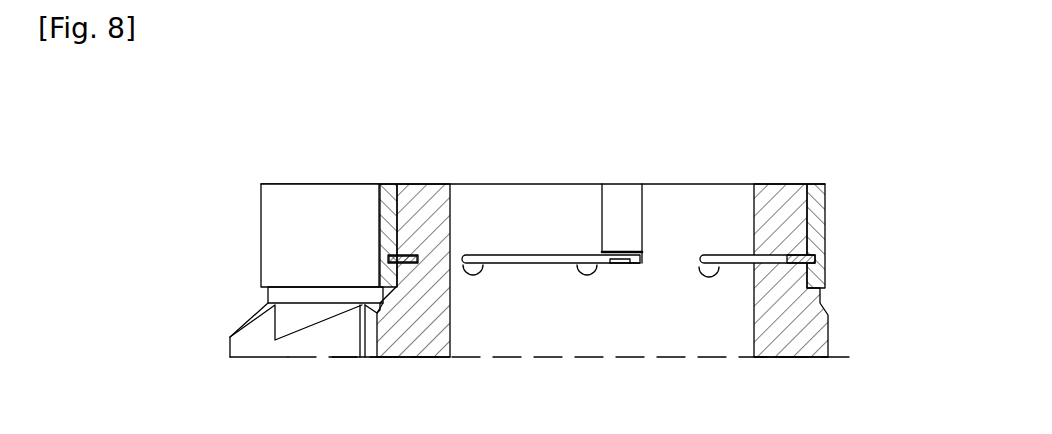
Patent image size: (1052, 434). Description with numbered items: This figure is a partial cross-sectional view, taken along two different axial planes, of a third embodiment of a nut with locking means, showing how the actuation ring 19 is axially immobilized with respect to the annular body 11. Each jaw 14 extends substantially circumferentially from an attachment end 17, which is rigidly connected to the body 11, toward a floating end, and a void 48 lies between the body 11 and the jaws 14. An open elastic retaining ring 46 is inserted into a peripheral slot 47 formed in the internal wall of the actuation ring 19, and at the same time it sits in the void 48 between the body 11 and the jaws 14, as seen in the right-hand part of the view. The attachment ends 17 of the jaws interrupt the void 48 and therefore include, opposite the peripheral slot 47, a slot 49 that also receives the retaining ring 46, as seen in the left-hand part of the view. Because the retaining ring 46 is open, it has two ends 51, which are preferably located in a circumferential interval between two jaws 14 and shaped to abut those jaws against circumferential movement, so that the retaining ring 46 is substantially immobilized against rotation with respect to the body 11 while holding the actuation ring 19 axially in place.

The annular body 11 is at (417, 313).
The jaw 14 is at (432, 218).
The attachment end 17 is at (449, 219).
The actuation ring 19 is at (275, 230).
The open elastic retaining ring 46 is at (407, 252).
The peripheral slot 47 is at (387, 257).
The void 48 is at (538, 260).
The slot 49 is at (396, 255).
The ends of the retaining ring 51 is at (613, 262).